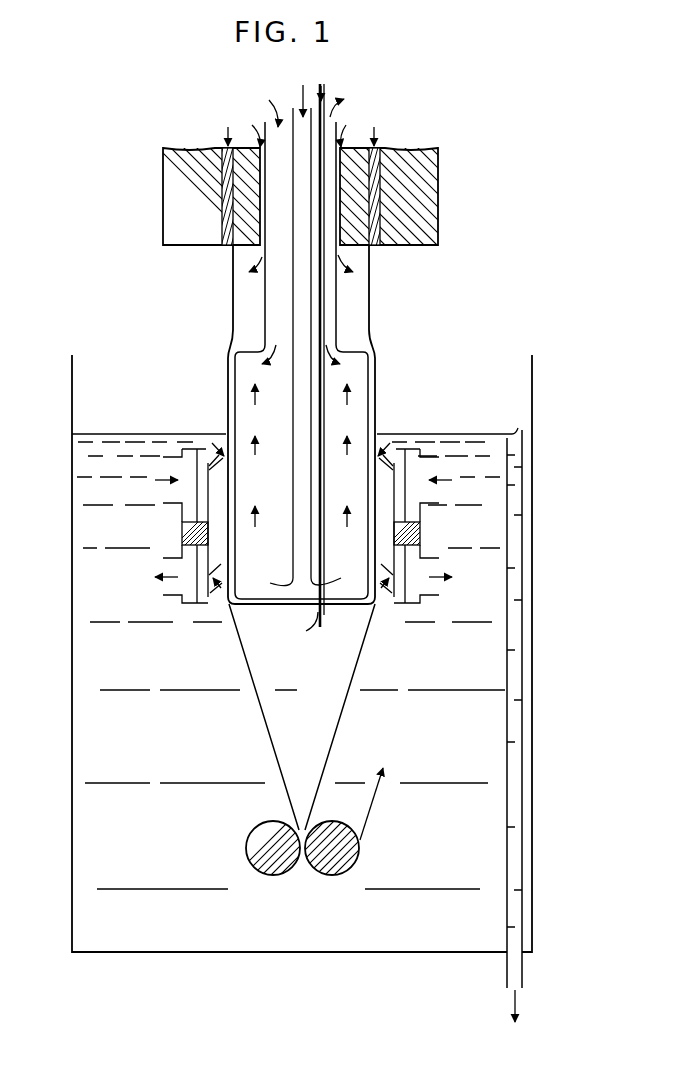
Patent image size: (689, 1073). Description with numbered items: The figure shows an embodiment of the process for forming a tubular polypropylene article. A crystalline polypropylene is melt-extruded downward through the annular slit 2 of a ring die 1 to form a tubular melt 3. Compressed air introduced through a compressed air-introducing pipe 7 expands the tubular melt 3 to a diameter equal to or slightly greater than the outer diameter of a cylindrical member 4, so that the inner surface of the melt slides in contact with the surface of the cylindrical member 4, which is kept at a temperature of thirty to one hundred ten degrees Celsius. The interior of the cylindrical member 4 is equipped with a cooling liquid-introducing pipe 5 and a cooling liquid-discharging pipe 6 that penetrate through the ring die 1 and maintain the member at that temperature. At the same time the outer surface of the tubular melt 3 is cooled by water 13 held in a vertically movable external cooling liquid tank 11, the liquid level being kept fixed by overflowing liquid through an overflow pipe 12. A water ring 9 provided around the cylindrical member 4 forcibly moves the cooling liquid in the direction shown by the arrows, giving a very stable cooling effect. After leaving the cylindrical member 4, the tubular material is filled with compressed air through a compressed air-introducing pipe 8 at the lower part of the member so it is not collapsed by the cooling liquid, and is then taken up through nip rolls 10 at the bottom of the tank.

The ring die 1 is at (436, 165).
The annular slit 2 is at (371, 233).
The tubular melt 3 is at (369, 308).
The cylindrical member 4 is at (350, 352).
The cooling liquid-introducing pipe 5 is at (312, 295).
The cooling liquid-discharging pipe 6 is at (334, 122).
The compressed air-introducing pipe 7 is at (340, 193).
The compressed air-introducing pipe 8 is at (322, 614).
The water ring 9 is at (435, 558).
The nip rolls 10 is at (320, 862).
The external cooling liquid tank 11 is at (533, 723).
The overflow pipe 12 is at (523, 853).
The water 13 is at (497, 793).